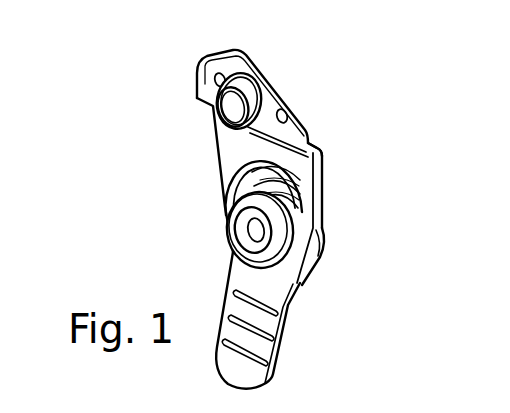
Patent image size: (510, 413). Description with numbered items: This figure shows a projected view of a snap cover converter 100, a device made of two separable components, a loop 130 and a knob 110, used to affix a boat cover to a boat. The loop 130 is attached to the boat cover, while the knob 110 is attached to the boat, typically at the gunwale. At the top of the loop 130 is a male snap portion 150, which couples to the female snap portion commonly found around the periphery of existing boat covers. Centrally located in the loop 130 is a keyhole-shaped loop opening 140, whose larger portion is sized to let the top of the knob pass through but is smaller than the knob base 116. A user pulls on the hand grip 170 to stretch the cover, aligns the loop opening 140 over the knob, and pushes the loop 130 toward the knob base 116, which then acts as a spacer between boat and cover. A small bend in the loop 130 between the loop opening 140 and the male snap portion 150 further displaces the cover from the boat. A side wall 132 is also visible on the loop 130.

The snap cover converter 100 is at (157, 93).
The knob 110 is at (226, 227).
The knob base 116 is at (321, 246).
The loop 130 is at (323, 188).
The side wall 132 is at (316, 151).
The loop opening 140 is at (228, 161).
The male snap portion 150 is at (213, 121).
The hand grip 170 is at (282, 355).